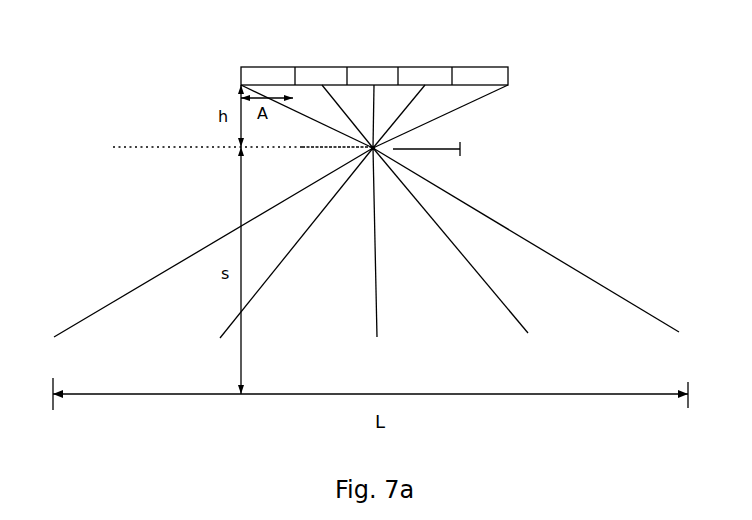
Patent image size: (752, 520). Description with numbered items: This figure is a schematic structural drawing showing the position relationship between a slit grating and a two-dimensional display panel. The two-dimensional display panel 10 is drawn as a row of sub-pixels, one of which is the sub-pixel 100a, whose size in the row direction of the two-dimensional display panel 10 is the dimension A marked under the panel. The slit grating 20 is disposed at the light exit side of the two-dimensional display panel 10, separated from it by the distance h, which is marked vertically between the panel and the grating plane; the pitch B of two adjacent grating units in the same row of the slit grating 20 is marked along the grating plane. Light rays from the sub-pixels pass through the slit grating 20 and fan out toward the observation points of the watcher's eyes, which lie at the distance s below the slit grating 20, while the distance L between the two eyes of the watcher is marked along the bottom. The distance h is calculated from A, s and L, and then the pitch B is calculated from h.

The two-dimensional display panel 10 is at (509, 72).
The sub-pixel 100a is at (366, 68).
The slit grating 20 is at (515, 150).